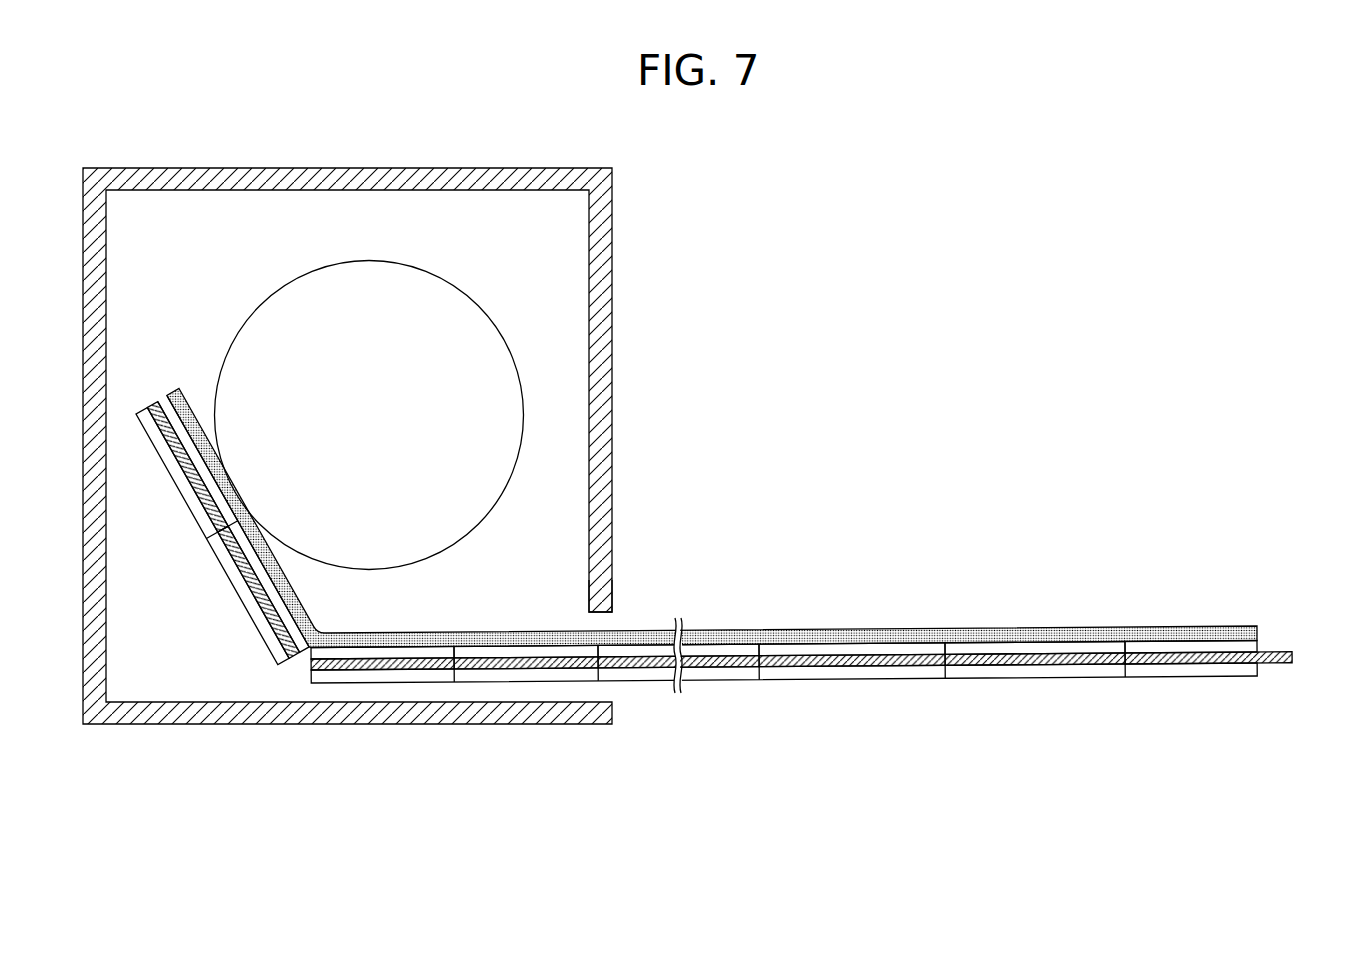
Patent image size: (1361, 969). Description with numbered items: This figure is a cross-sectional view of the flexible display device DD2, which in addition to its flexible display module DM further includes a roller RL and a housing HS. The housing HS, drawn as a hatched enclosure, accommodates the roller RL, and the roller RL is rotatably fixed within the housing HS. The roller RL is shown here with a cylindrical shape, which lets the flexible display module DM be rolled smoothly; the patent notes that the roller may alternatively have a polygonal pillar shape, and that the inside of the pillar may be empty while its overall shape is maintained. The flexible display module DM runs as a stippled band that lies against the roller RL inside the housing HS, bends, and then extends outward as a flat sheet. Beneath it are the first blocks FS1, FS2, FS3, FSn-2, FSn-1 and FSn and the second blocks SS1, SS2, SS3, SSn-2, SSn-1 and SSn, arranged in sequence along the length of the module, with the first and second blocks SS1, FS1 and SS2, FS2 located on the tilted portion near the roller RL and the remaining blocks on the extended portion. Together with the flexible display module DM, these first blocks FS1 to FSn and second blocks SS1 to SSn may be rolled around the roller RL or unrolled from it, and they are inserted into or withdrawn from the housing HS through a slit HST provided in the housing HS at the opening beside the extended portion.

The flexible display device DD2 is at (1029, 152).
The housing HS is at (510, 167).
The slit HST is at (613, 608).
The roller RL is at (391, 277).
The flexible display module DM is at (1220, 632).
The second block SS1 is at (195, 497).
The second block SS2 is at (267, 613).
The second block SS3 is at (398, 678).
The second block SSn-2 is at (805, 667).
The second block SSn-1 is at (1002, 665).
The second block SSn is at (1152, 665).
The first block FS1 is at (167, 408).
The first block FS2 is at (245, 553).
The first block FS3 is at (441, 653).
The first block FSn-2 is at (883, 653).
The first block FSn-1 is at (1062, 650).
The first block FSn is at (1167, 649).